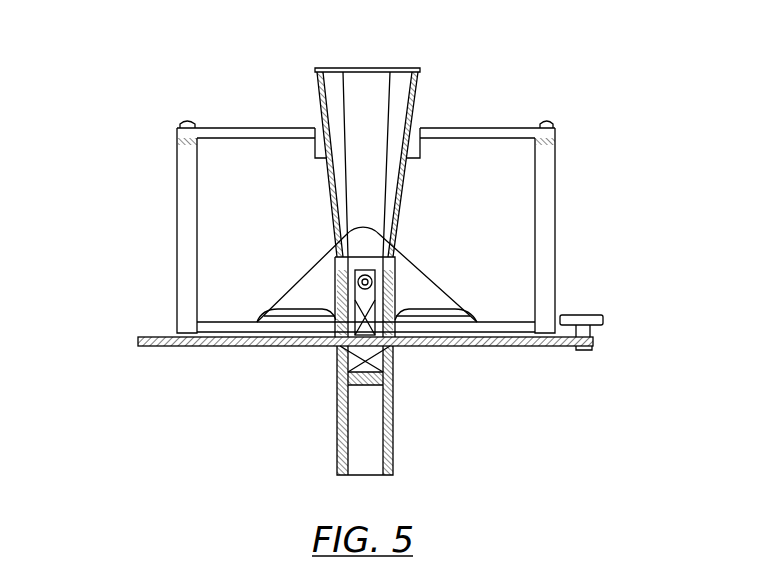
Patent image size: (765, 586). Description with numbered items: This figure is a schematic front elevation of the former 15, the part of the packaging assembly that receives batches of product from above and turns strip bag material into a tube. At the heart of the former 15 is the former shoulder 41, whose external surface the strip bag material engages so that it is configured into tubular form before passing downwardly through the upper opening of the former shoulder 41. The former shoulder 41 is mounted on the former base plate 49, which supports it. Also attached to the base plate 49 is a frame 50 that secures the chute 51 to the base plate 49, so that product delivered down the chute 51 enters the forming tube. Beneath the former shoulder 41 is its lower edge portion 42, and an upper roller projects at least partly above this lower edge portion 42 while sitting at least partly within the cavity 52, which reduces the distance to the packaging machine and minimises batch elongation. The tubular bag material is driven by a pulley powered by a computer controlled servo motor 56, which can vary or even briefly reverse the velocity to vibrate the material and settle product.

The former 15 is at (618, 157).
The former shoulder 41 is at (433, 280).
The lower edge portion 42 is at (368, 348).
The former base plate 49 is at (532, 340).
The frame 50 is at (175, 227).
The chute 51 is at (420, 101).
The cavity 52 is at (430, 320).
The servo motor 56 is at (338, 420).